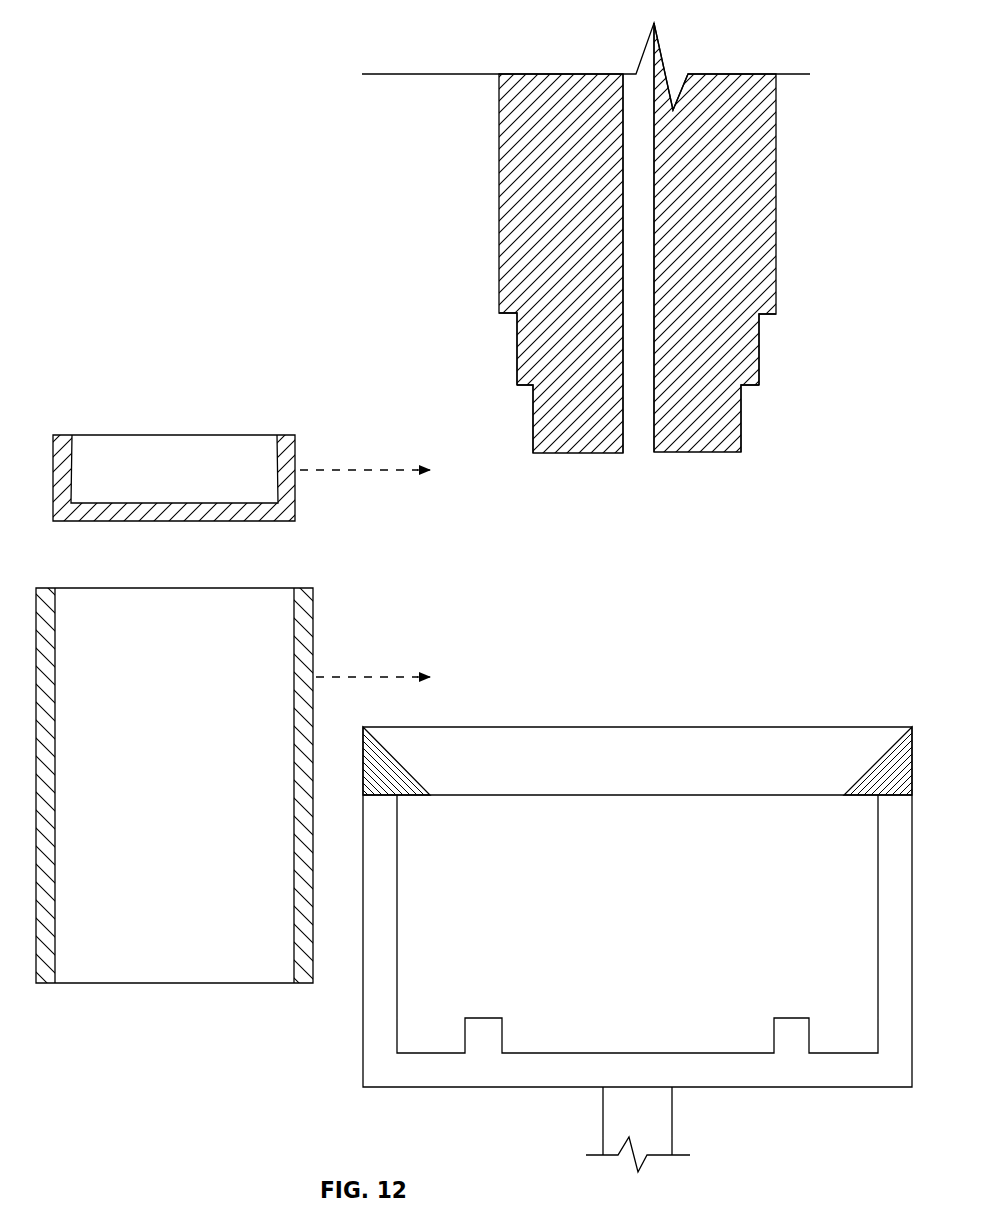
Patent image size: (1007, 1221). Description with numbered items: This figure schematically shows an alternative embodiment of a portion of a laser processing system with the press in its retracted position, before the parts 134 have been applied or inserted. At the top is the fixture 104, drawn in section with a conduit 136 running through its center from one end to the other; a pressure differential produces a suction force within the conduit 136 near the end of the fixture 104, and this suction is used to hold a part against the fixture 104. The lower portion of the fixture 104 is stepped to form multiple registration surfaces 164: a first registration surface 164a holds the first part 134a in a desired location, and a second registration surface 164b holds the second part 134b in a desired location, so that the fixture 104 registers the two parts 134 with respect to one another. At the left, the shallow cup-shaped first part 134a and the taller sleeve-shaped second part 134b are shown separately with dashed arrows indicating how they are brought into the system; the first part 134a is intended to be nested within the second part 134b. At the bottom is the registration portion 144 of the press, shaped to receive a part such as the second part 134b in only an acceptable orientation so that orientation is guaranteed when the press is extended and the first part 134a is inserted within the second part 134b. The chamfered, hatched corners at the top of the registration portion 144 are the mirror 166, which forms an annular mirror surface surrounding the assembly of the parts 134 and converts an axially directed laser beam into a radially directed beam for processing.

The fixture 104 is at (638, 238).
The conduit 136 is at (619, 142).
The registration surfaces 164 is at (638, 383).
The first registration surface 164a is at (525, 397).
The second registration surface 164b is at (509, 327).
The parts 134 is at (168, 677).
The first part 134a is at (171, 414).
The second part 134b is at (175, 582).
The registration portion 144 is at (637, 920).
The mirror 166 is at (406, 758).